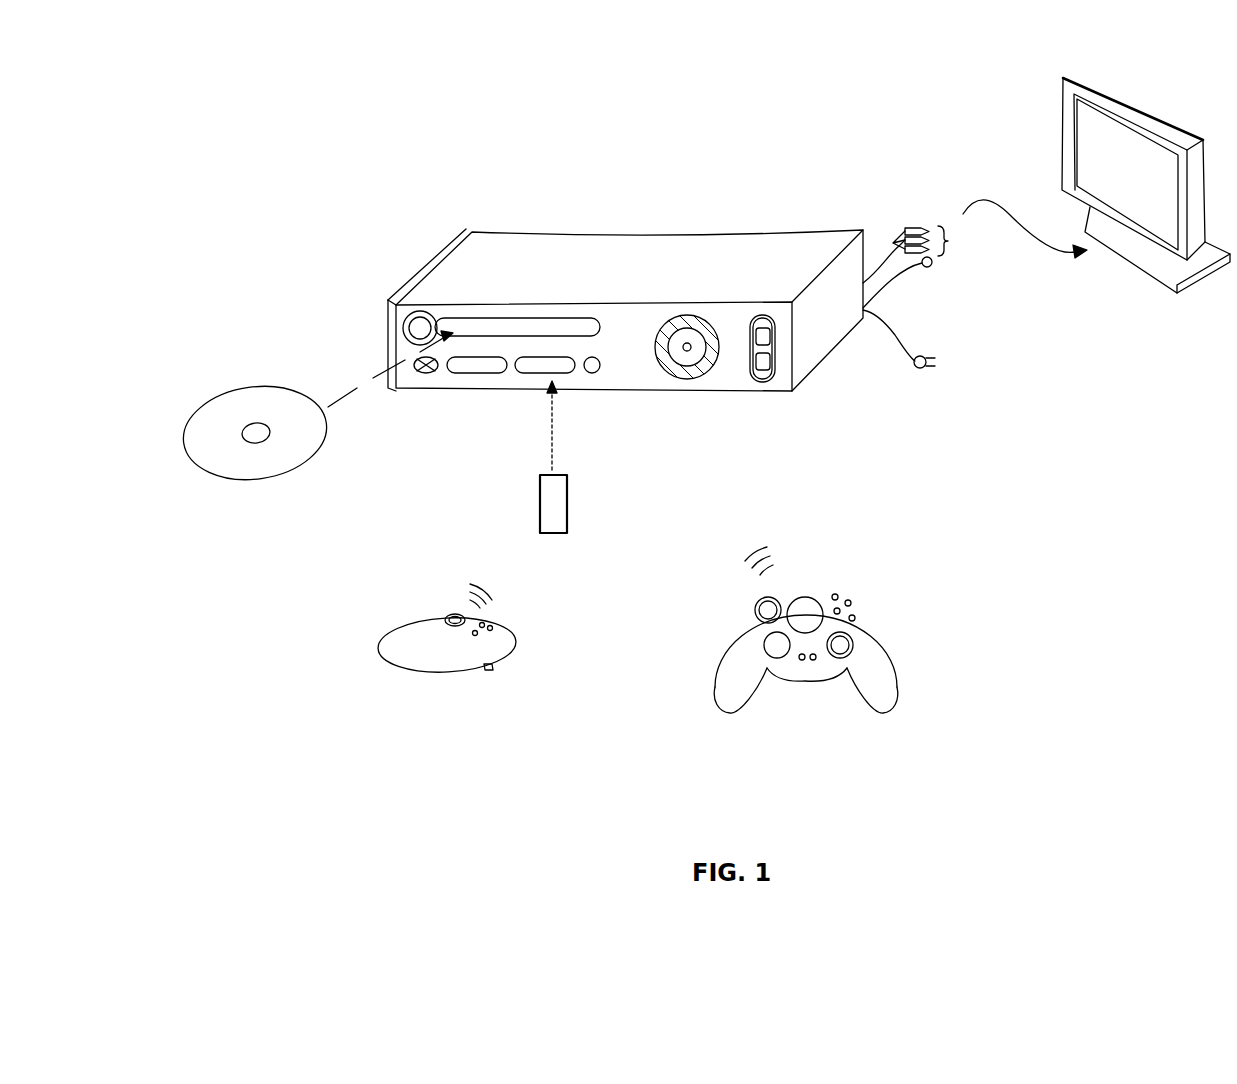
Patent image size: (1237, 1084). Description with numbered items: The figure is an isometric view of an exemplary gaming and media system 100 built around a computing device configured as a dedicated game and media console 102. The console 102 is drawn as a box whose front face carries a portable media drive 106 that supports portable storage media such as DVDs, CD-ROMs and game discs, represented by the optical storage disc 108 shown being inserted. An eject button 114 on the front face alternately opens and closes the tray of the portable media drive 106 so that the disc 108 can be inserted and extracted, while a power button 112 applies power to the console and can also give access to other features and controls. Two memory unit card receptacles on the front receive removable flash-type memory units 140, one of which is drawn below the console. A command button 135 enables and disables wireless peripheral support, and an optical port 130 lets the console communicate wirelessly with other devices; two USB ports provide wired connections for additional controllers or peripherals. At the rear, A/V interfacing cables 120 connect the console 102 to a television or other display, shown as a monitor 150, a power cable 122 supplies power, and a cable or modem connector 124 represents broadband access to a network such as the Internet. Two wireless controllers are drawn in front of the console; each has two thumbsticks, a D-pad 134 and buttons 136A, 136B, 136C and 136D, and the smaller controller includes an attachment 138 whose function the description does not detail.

The gaming system 100 is at (652, 196).
The computing device 102 is at (503, 240).
The portable media drive 106 is at (523, 318).
The optical storage disc 108 is at (263, 478).
The power button 112 is at (688, 380).
The eject button 114 is at (416, 327).
The A/V interfacing cables 120 is at (912, 222).
The power cable 122 is at (917, 368).
The cable or modem connector 124 is at (929, 268).
The optical port 130 is at (422, 375).
The D-pad 134 is at (764, 645).
The command button 135 is at (592, 373).
The button 136A is at (851, 603).
The button 136B is at (838, 595).
The button 136C is at (855, 618).
The button 136D is at (836, 608).
The wrist strap attachment 138 is at (490, 676).
The memory unit 140 is at (562, 534).
The monitor 150 is at (1063, 144).